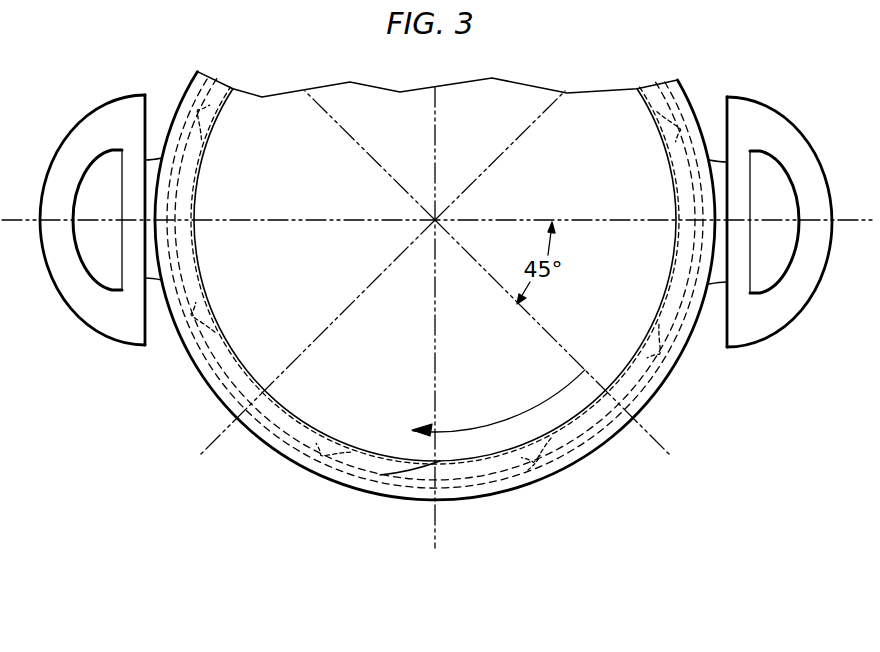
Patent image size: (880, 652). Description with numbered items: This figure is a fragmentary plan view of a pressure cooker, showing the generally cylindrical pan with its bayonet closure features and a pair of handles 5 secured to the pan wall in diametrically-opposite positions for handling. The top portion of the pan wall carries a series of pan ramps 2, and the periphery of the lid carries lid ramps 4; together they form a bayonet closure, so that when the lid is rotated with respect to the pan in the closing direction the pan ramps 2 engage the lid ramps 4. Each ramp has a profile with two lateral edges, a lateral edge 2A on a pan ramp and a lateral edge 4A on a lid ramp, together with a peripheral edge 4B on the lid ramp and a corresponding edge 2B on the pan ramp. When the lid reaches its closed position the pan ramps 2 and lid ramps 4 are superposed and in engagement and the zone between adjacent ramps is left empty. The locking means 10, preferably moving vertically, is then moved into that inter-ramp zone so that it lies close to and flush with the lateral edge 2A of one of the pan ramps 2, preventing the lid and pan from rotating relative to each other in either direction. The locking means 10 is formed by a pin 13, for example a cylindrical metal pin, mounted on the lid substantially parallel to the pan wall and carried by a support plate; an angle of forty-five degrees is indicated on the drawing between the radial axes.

The locking means 10 is at (550, 475).
The pan ramps 2 is at (355, 463).
The lateral edge 2A is at (325, 462).
The wall bottom portion 2B is at (400, 490).
The lid ramps 4 is at (225, 378).
The lateral edge 4A is at (668, 340).
The peripheral edge 4B is at (593, 438).
The handles 5 is at (97, 308).
The pin 13 is at (540, 463).